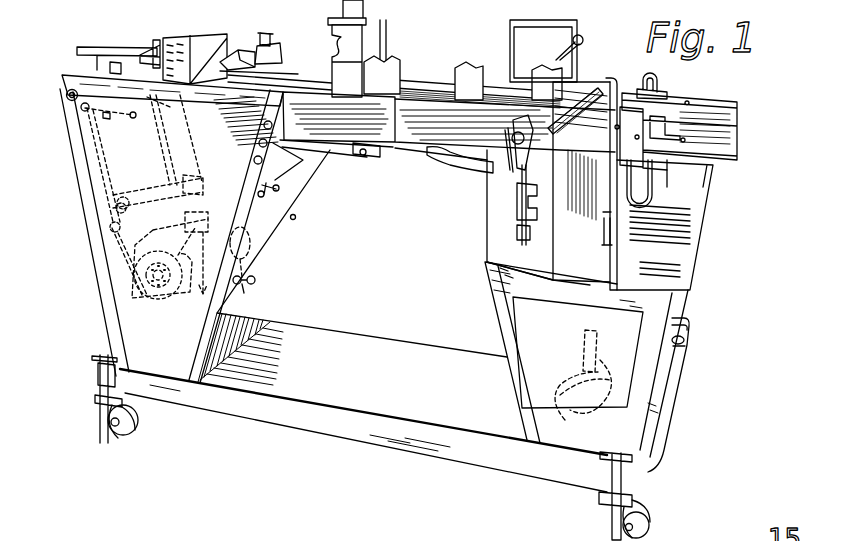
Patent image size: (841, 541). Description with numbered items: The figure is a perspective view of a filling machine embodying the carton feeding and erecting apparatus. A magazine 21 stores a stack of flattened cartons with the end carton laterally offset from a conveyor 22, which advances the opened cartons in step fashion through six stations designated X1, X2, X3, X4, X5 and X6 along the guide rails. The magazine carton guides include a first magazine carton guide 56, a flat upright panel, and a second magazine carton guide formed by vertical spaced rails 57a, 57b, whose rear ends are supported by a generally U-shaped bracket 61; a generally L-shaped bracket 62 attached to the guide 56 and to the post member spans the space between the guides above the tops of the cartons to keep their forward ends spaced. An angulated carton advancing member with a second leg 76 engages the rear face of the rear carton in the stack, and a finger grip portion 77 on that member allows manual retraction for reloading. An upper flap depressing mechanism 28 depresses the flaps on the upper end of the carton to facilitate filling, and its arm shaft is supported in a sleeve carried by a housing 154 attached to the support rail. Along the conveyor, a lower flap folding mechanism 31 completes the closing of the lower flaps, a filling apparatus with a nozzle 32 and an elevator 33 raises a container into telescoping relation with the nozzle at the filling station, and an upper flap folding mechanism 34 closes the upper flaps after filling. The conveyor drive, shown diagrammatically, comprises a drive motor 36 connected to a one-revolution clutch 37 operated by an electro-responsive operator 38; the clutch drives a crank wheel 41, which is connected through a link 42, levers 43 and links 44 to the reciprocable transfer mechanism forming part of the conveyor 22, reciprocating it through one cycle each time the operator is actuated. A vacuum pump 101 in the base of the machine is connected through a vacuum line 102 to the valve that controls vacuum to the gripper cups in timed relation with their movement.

The magazine 21 is at (606, 249).
The conveyor 22 is at (713, 100).
The upper flap depressing mechanism 28 is at (578, 58).
The lower flap folding mechanism 31 is at (445, 176).
The nozzle 32 is at (340, 16).
The elevator 33 is at (367, 176).
The upper flap folding mechanism 34 is at (192, 27).
The drive motor 36 is at (250, 226).
The one-revolution clutch 37 is at (158, 243).
The electro-responsive operator 38 is at (201, 210).
The crank wheel 41 is at (132, 296).
The link 42 is at (153, 229).
The levers 43 is at (160, 145).
The links 44 is at (160, 122).
The first magazine carton guide 56 is at (607, 208).
The rail 57a is at (516, 178).
The rail 57b is at (518, 230).
The U-shaped bracket 61 is at (534, 265).
The L-shaped bracket 62 is at (613, 79).
The second leg 76 is at (530, 208).
The finger grip portion 77 is at (518, 206).
The vacuum pump 101 is at (582, 358).
The vacuum line 102 is at (590, 340).
The housing 154 is at (521, 18).
The station X1 is at (540, 67).
The station X2 is at (478, 63).
The station X3 is at (399, 58).
The station X4 is at (343, 50).
The station X5 is at (276, 42).
The station X6 is at (244, 50).